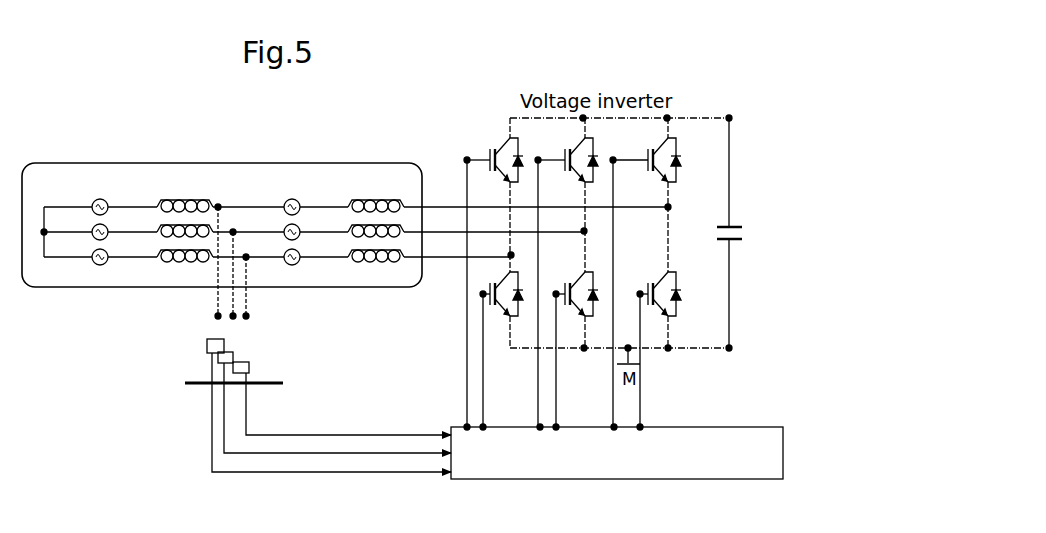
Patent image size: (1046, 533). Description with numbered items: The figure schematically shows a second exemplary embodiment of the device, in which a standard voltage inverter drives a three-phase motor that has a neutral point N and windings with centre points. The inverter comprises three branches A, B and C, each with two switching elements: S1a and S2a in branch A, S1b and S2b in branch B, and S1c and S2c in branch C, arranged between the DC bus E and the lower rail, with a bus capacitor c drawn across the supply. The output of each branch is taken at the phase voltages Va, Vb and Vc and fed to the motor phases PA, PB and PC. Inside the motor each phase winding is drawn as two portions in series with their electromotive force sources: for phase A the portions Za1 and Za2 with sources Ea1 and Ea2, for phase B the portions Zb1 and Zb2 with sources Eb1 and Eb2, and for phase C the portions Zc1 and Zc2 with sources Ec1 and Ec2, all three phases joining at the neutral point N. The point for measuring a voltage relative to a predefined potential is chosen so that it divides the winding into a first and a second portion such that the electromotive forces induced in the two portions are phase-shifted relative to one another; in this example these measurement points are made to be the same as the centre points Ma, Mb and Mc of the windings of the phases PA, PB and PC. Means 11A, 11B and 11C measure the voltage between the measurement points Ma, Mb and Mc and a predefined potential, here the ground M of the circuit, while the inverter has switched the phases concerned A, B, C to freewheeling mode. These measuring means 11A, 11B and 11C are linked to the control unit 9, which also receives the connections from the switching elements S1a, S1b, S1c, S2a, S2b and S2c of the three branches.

The control unit 9 is at (623, 465).
The means for measuring the voltage 11A is at (207, 345).
The means for measuring the voltage 11B is at (218, 357).
The means for measuring the voltage 11C is at (249, 368).
The phase PA is at (213, 184).
The phase PB is at (162, 218).
The phase PC is at (157, 258).
The branch A is at (661, 220).
The branch B is at (582, 220).
The branch C is at (508, 220).
The DC bus voltage E is at (621, 109).
The neutral point N is at (37, 232).
The ground M is at (234, 395).
The centre point Ma is at (203, 266).
The centre point Mb is at (236, 287).
The centre point Mc is at (262, 291).
The EMF source a1 Ea1 is at (80, 204).
The EMF source b1 Eb1 is at (80, 229).
The EMF source c1 Ec1 is at (80, 254).
The EMF source a2 Ea2 is at (273, 204).
The EMF source b2 Eb2 is at (273, 229).
The EMF source c2 Ec2 is at (273, 254).
The first portion of the winding Za1 is at (185, 194).
The first portion of the winding Zb1 is at (167, 225).
The first portion of the winding Zc1 is at (185, 266).
The second portion of the winding Za2 is at (376, 194).
The second portion of the winding Zb2 is at (357, 225).
The second portion of the winding Zc2 is at (376, 266).
The switching element S1a is at (661, 153).
The switching element S1b is at (582, 153).
The switching element S1c is at (508, 153).
The switching element S2a is at (652, 289).
The switching element S2b is at (571, 289).
The switching element S2c is at (496, 289).
The phase voltage a Va is at (645, 196).
The phase voltage b Vb is at (569, 220).
The phase voltage c Vc is at (497, 244).
The DC bus capacitor c is at (737, 233).